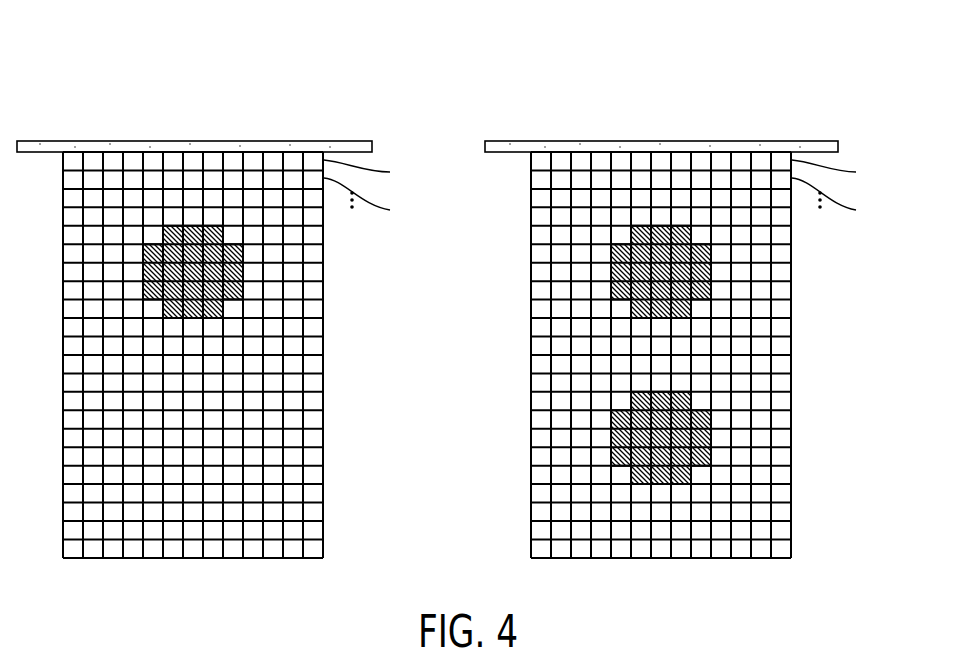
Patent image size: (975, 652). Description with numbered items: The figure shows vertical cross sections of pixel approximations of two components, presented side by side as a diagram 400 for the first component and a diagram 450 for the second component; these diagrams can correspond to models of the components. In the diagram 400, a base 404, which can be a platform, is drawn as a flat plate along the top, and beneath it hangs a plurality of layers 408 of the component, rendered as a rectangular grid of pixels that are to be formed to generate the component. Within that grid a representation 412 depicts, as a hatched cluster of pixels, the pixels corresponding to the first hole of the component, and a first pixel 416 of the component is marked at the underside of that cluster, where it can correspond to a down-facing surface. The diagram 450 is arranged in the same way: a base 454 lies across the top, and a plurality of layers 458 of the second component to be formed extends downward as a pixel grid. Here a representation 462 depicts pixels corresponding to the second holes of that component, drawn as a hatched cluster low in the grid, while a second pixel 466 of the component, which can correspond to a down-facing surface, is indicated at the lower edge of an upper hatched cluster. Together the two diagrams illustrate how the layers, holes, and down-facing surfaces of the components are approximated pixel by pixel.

The diagram 400 is at (118, 84).
The base 404 is at (295, 143).
The plurality of layers 408 is at (312, 272).
The representation 412 is at (243, 300).
The first pixel 416 is at (203, 318).
The diagram 450 is at (586, 84).
The base 454 is at (763, 143).
The plurality of layers 458 is at (540, 200).
The representation 462 is at (611, 437).
The second pixel 466 is at (632, 313).